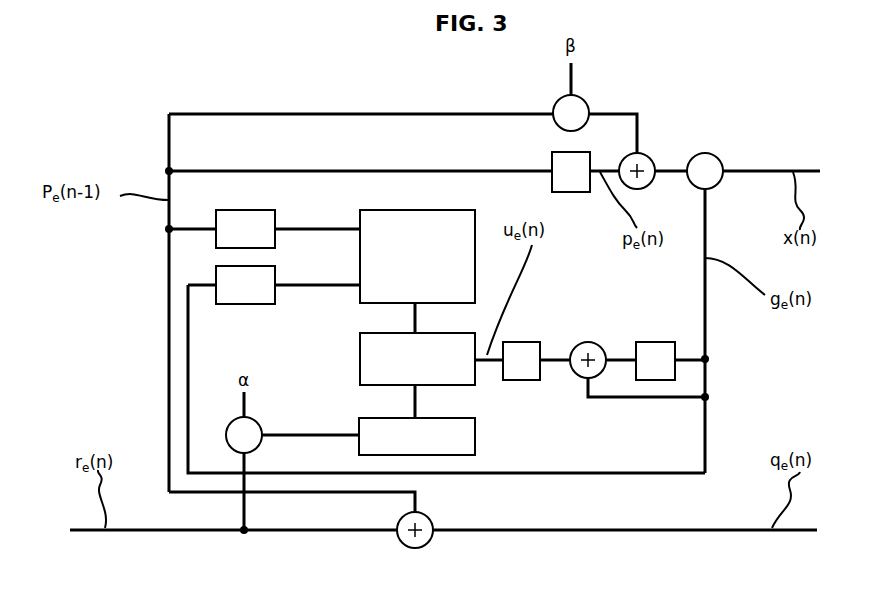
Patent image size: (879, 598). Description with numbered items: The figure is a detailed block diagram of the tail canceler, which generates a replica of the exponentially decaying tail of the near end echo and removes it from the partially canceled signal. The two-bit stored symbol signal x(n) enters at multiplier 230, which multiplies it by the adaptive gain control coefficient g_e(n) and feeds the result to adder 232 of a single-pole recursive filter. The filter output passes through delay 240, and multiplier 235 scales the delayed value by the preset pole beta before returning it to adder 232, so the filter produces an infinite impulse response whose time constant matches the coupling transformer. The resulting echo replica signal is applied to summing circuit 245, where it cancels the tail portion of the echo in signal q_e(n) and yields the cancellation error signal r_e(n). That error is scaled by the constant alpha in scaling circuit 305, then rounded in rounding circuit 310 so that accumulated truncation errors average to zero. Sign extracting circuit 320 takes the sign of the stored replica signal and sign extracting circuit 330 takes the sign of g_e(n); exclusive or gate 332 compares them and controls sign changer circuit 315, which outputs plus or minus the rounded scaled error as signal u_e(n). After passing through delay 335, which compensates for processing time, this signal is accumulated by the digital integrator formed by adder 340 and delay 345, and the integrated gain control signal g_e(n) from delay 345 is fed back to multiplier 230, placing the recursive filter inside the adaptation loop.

The multiplier 230 is at (715, 155).
The adder 232 is at (650, 158).
The multiplier 235 is at (553, 104).
The delay 240 is at (552, 160).
The summing circuit 245 is at (432, 518).
The scaling circuit 305 is at (262, 425).
The rounding circuit 310 is at (475, 440).
The sign changer circuit 315 is at (475, 370).
The sign extracting circuit 320 is at (275, 212).
The sign extracting circuit 330 is at (275, 268).
The exclusive or gate 332 is at (358, 297).
The delay 335 is at (520, 342).
The adder 340 is at (594, 342).
The delay 345 is at (650, 342).